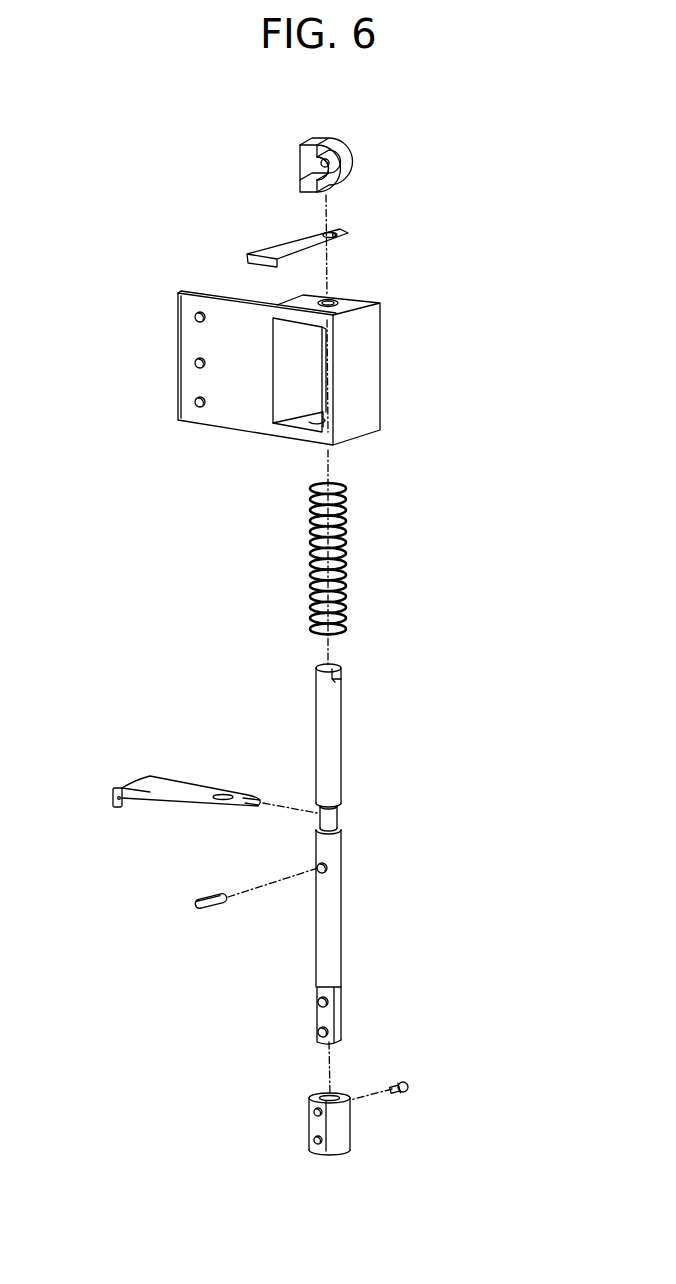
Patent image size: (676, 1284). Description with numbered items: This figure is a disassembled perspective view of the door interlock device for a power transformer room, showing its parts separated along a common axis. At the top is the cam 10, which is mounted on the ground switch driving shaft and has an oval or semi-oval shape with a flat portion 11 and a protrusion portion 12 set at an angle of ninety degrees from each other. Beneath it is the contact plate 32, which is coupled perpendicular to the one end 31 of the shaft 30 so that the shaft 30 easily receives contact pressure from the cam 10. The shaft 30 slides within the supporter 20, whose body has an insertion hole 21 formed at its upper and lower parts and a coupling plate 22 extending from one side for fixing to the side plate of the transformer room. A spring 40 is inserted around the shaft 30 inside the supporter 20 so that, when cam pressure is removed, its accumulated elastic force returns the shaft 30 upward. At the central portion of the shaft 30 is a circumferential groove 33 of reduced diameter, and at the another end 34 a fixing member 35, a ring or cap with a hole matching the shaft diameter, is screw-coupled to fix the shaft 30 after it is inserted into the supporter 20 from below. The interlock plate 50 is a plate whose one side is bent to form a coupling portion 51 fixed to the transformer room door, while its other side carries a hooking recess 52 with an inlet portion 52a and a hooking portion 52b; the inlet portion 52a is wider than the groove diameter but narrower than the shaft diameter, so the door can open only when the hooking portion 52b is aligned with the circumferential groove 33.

The cam 10 is at (325, 167).
The flat portion 11 is at (303, 188).
The protrusion portion 12 is at (348, 164).
The contact plate 32 is at (268, 250).
The supporter 20 is at (300, 588).
The insertion hole 21 is at (332, 301).
The coupling plate 22 is at (232, 418).
The spring 40 is at (312, 568).
The shaft 30 is at (357, 735).
The one end 31 is at (338, 667).
The circumferential groove 33 is at (333, 815).
The another end 34 is at (337, 1013).
The fixing member 35 is at (345, 1122).
The interlock plate 50 is at (186, 760).
The coupling portion 51 is at (113, 800).
The hooking recess 52 is at (246, 756).
The inlet portion 52a is at (250, 798).
The hooking portion 52b is at (223, 795).